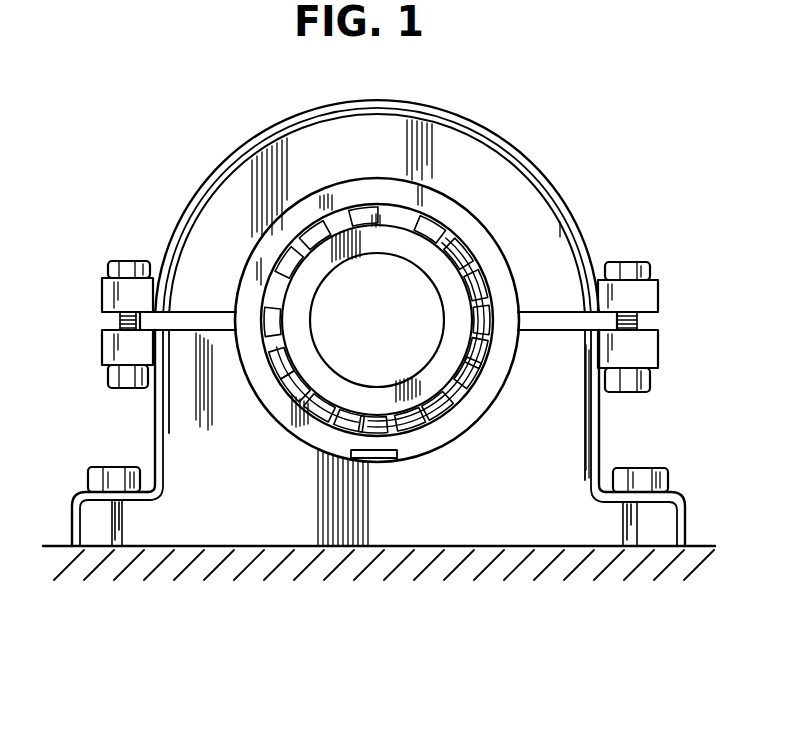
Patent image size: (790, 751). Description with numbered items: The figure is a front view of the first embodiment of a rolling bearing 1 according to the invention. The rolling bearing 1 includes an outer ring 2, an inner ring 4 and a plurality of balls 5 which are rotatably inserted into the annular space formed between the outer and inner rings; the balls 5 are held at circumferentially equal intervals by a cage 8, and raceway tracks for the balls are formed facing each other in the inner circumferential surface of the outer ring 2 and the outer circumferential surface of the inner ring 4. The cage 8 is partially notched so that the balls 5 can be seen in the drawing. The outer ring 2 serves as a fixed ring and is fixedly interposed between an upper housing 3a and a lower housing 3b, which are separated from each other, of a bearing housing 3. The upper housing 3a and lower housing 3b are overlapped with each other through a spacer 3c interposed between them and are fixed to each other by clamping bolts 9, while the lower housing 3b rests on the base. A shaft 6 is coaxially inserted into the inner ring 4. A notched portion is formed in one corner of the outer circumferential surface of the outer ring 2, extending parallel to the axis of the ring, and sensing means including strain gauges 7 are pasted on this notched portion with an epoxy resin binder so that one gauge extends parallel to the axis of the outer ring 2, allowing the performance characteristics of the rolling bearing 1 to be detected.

The rolling bearing 1 is at (443, 287).
The outer ring 2 is at (497, 263).
The bearing housing 3 is at (585, 434).
The upper housing 3a is at (219, 169).
The lower housing 3b is at (160, 433).
The spacer 3c is at (553, 328).
The inner ring 4 is at (452, 262).
The balls 5 is at (470, 252).
The shaft 6 is at (400, 266).
The strain gauges 7 is at (400, 462).
The cage 8 is at (476, 372).
The clamping bolts 9 is at (640, 319).